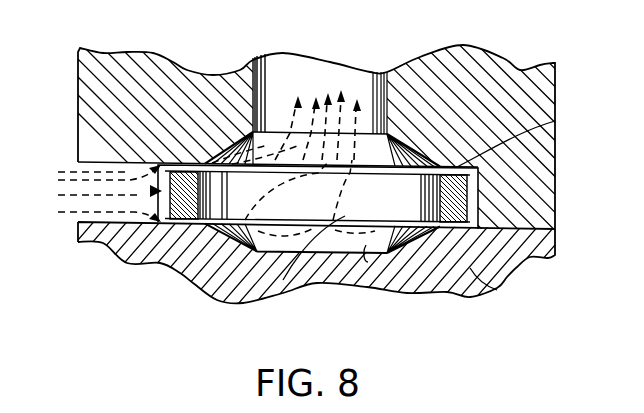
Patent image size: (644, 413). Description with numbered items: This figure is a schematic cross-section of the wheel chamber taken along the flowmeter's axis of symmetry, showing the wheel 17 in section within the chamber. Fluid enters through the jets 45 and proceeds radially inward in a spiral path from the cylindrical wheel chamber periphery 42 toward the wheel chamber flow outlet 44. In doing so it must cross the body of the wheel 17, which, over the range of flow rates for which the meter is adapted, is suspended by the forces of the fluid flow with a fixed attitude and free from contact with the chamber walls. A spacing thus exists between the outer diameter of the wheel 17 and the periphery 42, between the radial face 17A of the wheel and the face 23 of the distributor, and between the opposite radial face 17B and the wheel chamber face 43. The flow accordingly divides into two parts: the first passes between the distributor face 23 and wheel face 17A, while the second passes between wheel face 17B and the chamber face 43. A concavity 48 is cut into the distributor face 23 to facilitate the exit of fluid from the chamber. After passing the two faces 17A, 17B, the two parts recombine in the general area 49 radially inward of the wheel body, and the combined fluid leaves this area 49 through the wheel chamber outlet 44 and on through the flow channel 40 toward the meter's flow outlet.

The wheel 17 is at (320, 240).
The radial face of wheel 17A is at (497, 290).
The radial face of wheel 17B is at (555, 121).
The face of distributor 23 is at (108, 247).
The flow channel 40 is at (386, 80).
The wheel chamber periphery 42 is at (455, 273).
The wheel chamber face 43 is at (180, 160).
The wheel chamber flow outlet 44 is at (245, 140).
The jets 45 is at (151, 191).
The concavity 48 is at (366, 245).
The general area 49 is at (348, 216).